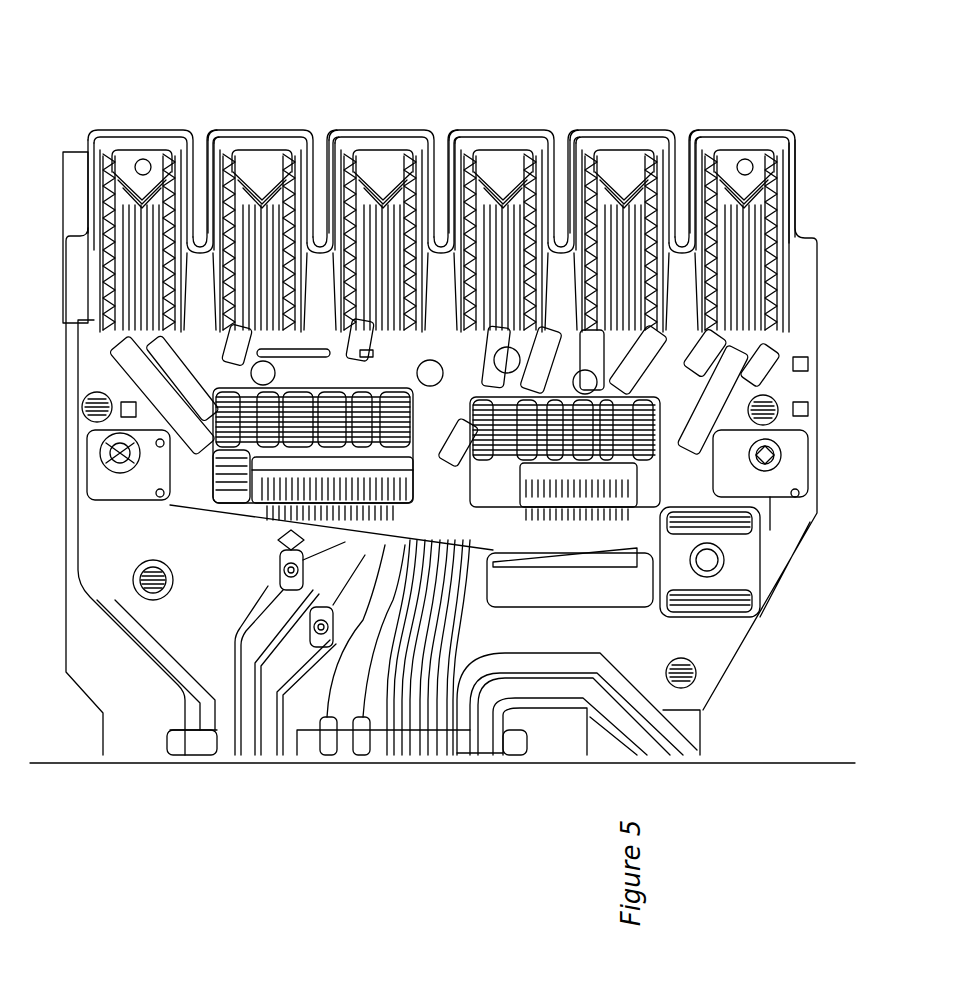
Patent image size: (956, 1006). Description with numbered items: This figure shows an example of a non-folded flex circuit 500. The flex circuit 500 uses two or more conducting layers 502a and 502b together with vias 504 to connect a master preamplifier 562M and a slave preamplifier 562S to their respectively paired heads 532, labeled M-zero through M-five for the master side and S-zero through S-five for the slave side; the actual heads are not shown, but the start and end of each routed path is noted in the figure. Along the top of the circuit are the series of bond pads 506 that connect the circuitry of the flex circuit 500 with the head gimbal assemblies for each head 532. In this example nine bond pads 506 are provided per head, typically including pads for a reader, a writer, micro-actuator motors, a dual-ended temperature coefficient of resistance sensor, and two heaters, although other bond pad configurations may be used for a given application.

The non-folded flex circuit 500 is at (62, 467).
The conducting layer 502a is at (178, 420).
The conducting layer 502b is at (307, 373).
The vias 504 is at (693, 372).
The bond pads 506 is at (105, 310).
The heads 532 is at (441, 188).
The master preamplifier 562M is at (339, 632).
The slave preamplifier 562S is at (431, 632).